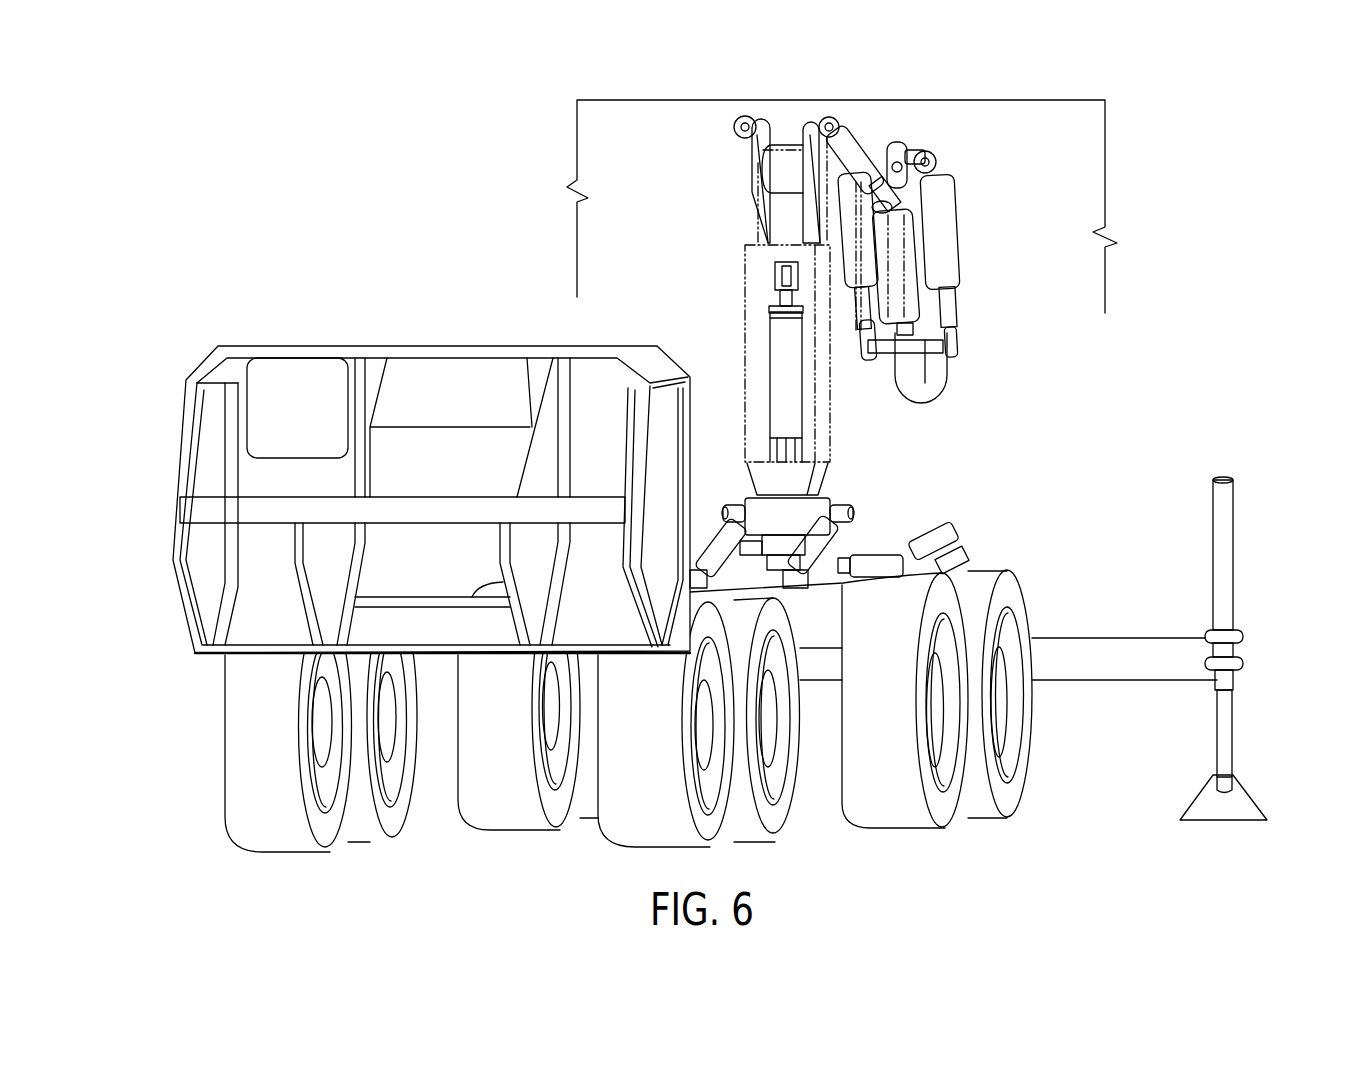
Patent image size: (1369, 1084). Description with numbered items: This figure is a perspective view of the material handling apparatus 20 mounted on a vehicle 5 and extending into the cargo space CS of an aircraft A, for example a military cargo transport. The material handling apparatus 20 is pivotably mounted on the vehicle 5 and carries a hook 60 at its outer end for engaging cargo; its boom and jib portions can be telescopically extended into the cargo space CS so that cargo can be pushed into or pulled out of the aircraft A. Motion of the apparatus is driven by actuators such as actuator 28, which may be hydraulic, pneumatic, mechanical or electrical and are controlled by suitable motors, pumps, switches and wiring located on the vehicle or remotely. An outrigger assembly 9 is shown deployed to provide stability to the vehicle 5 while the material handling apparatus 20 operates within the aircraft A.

The vehicle 5 is at (133, 598).
The material handling apparatus 20 is at (822, 352).
The actuator 28 is at (937, 242).
The hook 60 is at (937, 377).
The outrigger assembly 9 is at (1276, 766).
The aircraft A is at (1137, 146).
The cargo space CS is at (627, 276).